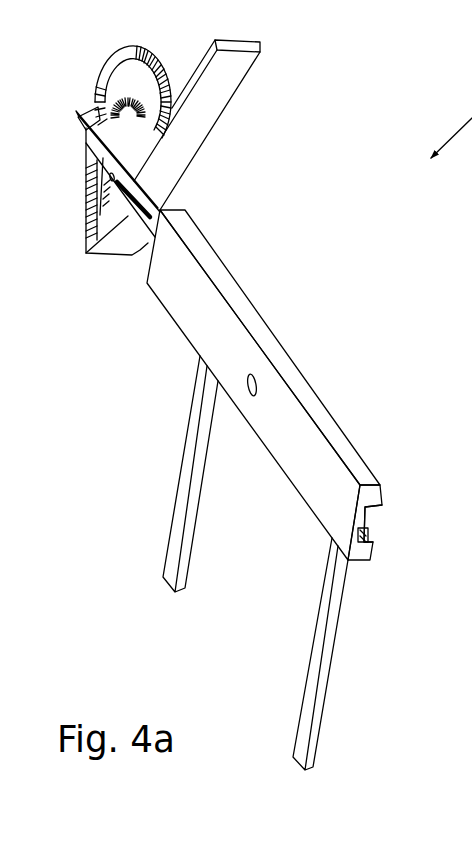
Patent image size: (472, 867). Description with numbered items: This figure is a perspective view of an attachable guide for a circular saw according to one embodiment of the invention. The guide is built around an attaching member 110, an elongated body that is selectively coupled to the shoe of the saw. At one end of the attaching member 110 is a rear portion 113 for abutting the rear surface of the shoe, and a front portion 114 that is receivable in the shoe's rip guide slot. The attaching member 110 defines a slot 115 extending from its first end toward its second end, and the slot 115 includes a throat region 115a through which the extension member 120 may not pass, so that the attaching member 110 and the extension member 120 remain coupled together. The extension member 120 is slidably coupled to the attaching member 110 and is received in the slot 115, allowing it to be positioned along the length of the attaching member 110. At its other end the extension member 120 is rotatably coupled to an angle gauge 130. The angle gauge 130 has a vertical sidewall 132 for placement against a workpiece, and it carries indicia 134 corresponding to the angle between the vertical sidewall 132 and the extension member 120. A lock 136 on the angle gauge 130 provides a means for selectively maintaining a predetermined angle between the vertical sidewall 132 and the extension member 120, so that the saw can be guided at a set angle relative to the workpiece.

The attaching member 110 is at (282, 318).
The rear portion 113 is at (308, 662).
The front portion 114 is at (178, 542).
The slot 115 is at (370, 527).
The throat region 115a is at (368, 515).
The extension member 120 is at (152, 195).
The angle gauge 130 is at (92, 258).
The vertical sidewall 132 is at (223, 75).
The indicia 134 is at (135, 65).
The lock 136 is at (80, 137).